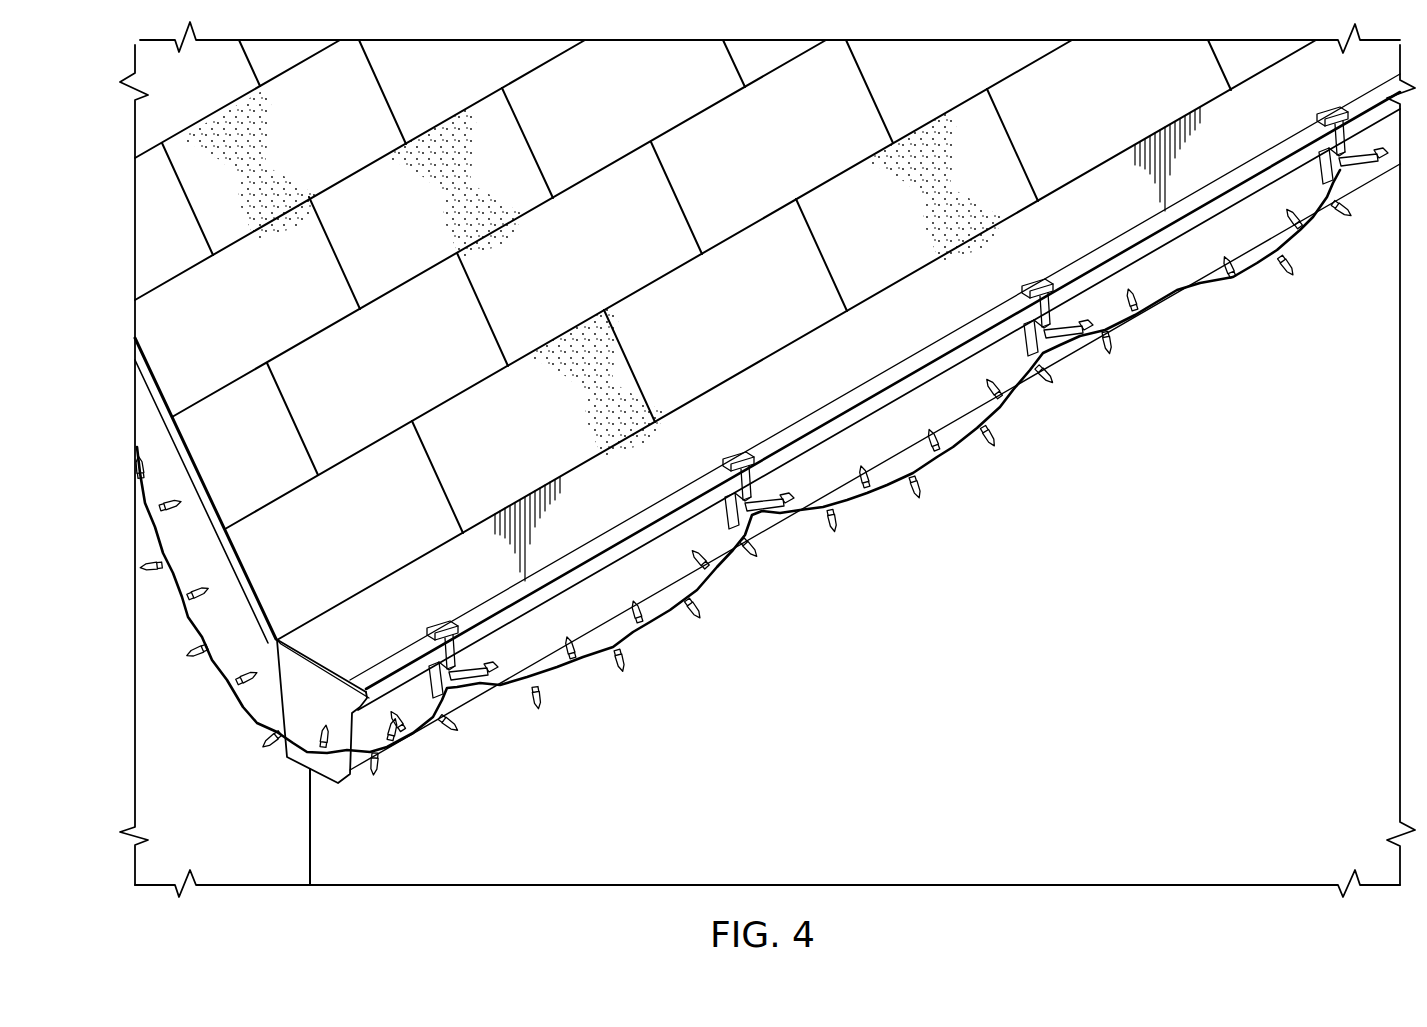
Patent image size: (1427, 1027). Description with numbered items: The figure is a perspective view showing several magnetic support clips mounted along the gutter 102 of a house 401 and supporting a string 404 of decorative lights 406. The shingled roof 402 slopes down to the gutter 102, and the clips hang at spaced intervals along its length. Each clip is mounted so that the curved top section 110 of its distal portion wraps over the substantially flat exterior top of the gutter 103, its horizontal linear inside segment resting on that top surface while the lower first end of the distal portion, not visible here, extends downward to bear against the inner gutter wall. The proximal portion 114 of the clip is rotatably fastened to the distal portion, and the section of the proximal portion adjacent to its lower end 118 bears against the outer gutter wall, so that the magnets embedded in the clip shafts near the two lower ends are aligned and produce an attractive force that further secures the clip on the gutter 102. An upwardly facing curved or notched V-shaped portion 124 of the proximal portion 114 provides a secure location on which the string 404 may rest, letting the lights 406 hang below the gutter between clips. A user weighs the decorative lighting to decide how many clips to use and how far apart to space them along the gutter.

The gutter 102 is at (482, 706).
The exterior top of the gutter 103 is at (505, 598).
The curved top section 110 is at (907, 402).
The proximal portion 114 is at (784, 538).
The lower end of the proximal portion 118 is at (680, 494).
The hook portion 124 is at (755, 445).
The house 401 is at (242, 833).
The roof shingles 402 is at (622, 263).
The string 404 is at (657, 628).
The decorative lights 406 is at (932, 500).